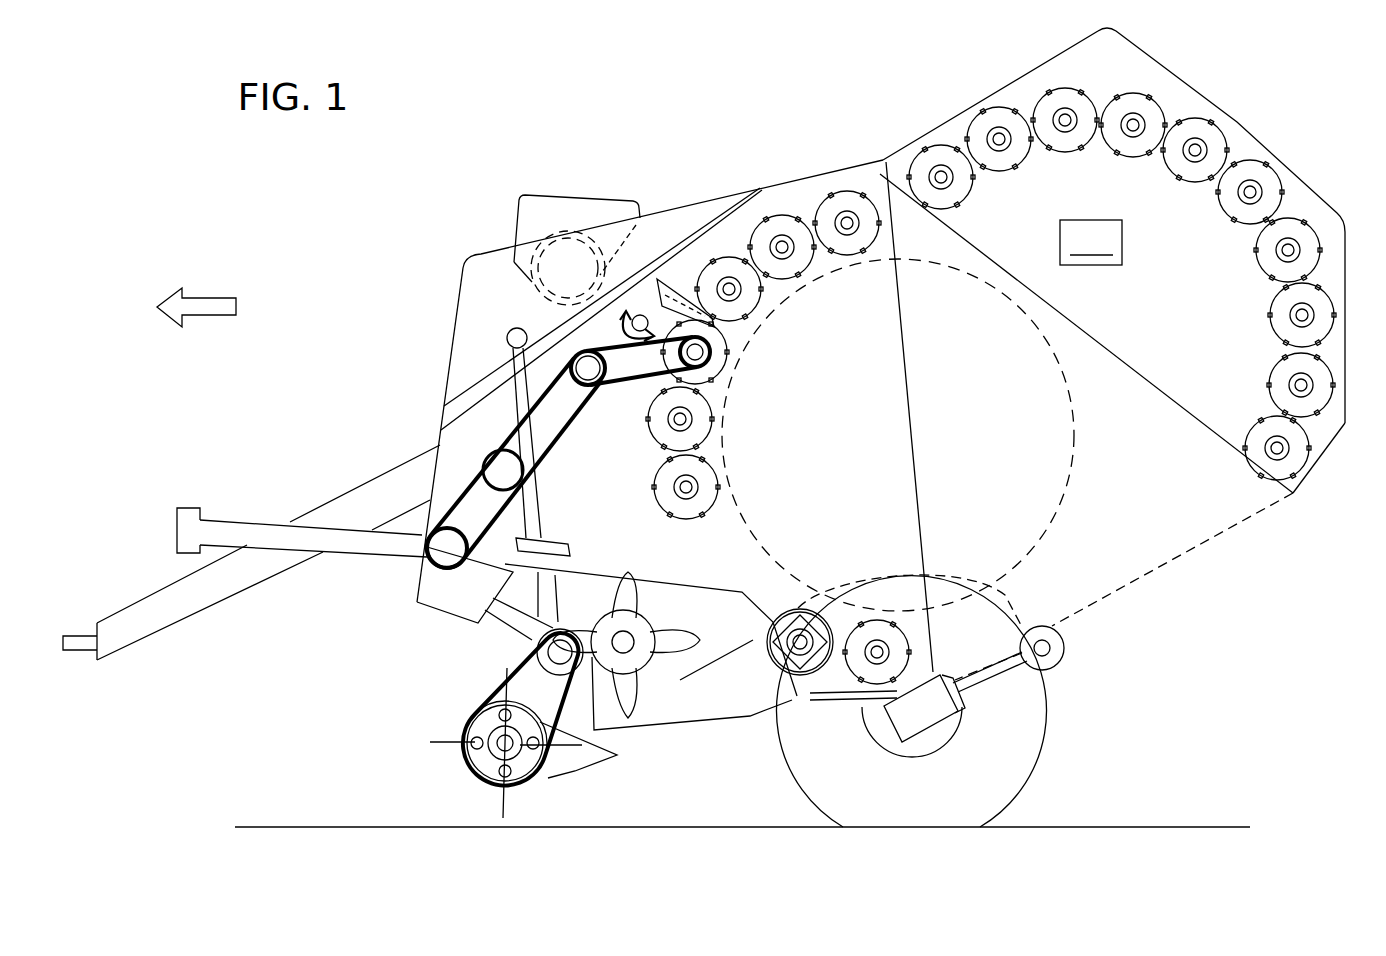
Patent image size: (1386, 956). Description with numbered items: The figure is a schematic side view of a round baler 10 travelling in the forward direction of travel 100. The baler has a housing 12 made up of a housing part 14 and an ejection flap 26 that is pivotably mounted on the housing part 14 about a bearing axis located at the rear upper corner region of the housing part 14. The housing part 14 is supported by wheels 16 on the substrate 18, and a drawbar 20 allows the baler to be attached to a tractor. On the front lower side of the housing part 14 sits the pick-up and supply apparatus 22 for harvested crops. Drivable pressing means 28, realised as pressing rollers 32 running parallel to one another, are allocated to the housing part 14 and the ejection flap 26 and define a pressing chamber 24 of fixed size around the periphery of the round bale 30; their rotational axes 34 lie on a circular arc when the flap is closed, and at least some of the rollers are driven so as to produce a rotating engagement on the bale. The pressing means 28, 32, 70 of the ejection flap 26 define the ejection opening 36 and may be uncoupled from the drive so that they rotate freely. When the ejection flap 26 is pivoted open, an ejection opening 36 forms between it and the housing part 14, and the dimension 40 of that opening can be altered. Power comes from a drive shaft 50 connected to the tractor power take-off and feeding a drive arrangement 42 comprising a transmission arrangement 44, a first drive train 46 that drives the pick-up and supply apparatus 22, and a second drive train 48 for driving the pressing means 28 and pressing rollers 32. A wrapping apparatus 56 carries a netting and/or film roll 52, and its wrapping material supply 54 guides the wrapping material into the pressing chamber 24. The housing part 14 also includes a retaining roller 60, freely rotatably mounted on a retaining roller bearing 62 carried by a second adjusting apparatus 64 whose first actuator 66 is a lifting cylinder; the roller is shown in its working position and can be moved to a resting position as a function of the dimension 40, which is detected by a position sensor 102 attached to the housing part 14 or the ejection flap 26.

The round baler 10 is at (415, 358).
The housing 12 is at (802, 170).
The housing part 14 is at (805, 402).
The wheels 16 is at (838, 772).
The substrate 18 is at (1063, 827).
The drawbar 20 is at (200, 595).
The pick-up and supply apparatus 22 is at (487, 760).
The pressing chamber 24 is at (795, 512).
The ejection flap 26 is at (1170, 250).
The pressing means 28 is at (991, 376).
The round bale 30 is at (1030, 460).
The pressing rollers 32 is at (1050, 107).
The rotational axes 34 is at (1008, 160).
The ejection opening 36 is at (1262, 542).
The dimension of the ejection opening 40 is at (1270, 510).
The drive arrangement 42 is at (436, 625).
The transmission arrangement 44 is at (437, 584).
The first drive train 46 is at (540, 641).
The second drive train 48 is at (500, 470).
The drive shaft 50 is at (223, 533).
The netting and/or film roll 52 is at (562, 262).
The wrapping material supply 54 is at (621, 338).
The wrapping apparatus 56 is at (652, 234).
The retaining roller 60 is at (1057, 648).
The retaining roller bearing 62 is at (1043, 650).
The second adjusting apparatus 64 is at (924, 743).
The first actuator 66 is at (923, 733).
The pressing means of the ejection flap 70 is at (1250, 462).
The forward direction of travel 100 is at (203, 305).
The position sensor 102 is at (1091, 242).